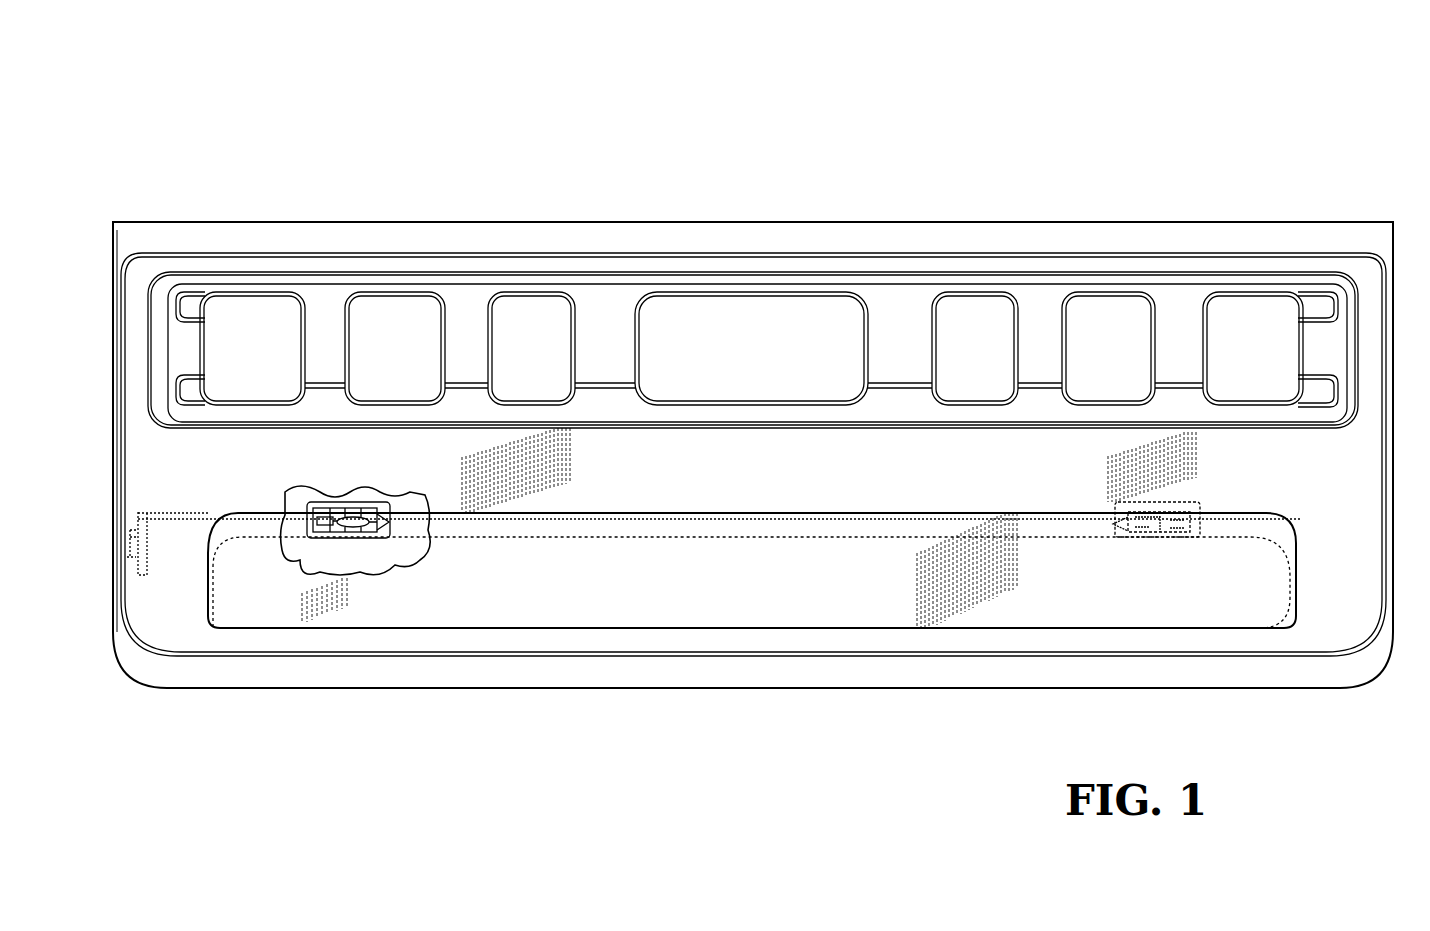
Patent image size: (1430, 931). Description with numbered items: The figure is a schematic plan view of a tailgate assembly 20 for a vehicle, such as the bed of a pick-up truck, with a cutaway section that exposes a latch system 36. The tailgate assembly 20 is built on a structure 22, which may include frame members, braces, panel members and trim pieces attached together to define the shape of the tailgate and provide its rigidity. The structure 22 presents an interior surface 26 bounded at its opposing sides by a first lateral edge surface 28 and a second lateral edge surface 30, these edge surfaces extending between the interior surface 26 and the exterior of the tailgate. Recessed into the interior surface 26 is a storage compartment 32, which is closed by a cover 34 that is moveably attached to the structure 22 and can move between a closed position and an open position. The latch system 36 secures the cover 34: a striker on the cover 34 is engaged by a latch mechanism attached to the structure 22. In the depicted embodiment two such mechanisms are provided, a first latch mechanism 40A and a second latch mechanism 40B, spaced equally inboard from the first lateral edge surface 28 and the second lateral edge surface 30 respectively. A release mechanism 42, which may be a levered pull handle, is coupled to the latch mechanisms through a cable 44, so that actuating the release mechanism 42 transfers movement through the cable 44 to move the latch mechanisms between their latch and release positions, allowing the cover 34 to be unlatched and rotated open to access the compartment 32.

The tailgate assembly 20 is at (1002, 106).
The structure 22 is at (644, 214).
The interior surface 26 is at (924, 479).
The first lateral edge surface 28 is at (1387, 612).
The second lateral edge surface 30 is at (111, 298).
The storage compartment 32 is at (755, 540).
The cover 34 is at (208, 553).
The latch system 36 is at (402, 510).
The first latch mechanism 40A is at (305, 490).
The second latch mechanism 40B is at (1178, 500).
The release mechanism 42 is at (124, 560).
The cable 44 is at (183, 512).